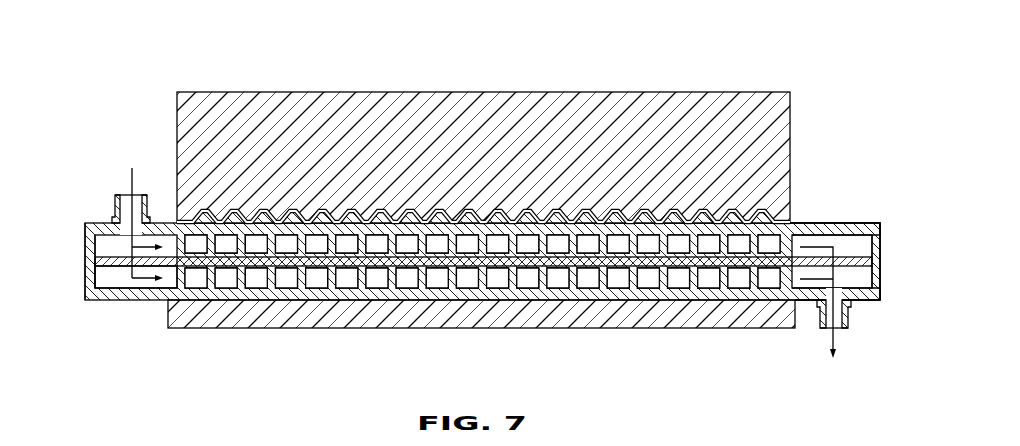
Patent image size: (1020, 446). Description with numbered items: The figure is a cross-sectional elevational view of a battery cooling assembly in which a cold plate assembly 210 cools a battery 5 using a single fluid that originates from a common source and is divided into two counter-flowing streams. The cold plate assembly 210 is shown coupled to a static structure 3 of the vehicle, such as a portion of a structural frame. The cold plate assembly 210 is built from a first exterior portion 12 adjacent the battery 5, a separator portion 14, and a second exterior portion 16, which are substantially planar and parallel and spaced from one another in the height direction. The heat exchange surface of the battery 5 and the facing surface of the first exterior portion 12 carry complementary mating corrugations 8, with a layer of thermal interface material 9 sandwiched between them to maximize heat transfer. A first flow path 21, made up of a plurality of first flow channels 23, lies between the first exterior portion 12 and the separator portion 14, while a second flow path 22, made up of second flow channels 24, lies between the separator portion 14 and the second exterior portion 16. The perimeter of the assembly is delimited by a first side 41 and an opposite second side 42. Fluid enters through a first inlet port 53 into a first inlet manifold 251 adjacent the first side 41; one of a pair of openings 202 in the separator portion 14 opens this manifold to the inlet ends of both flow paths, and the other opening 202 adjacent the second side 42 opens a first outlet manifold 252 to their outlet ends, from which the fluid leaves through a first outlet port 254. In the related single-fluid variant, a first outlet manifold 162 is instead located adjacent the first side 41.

The static structure 3 is at (427, 318).
The battery 5 is at (468, 108).
The corrugations 8 is at (277, 203).
The thermal interface material 9 is at (313, 243).
The first exterior portion 12 is at (872, 223).
The separator portion 14 is at (880, 257).
The second exterior portion 16 is at (870, 293).
The first flow path 21 is at (405, 243).
The second flow path 22 is at (347, 279).
The first flow channels 23 is at (482, 244).
The second flow channels 24 is at (482, 278).
The first side 41 is at (85, 260).
The second side 42 is at (880, 270).
The first inlet port 53 is at (123, 220).
The first outlet manifold 162 is at (112, 277).
The openings 202 is at (103, 263).
The cold plate assembly 210 is at (78, 221).
The first inlet manifold 251 is at (112, 243).
The first outlet manifold 252 is at (845, 243).
The first outlet port 254 is at (823, 328).